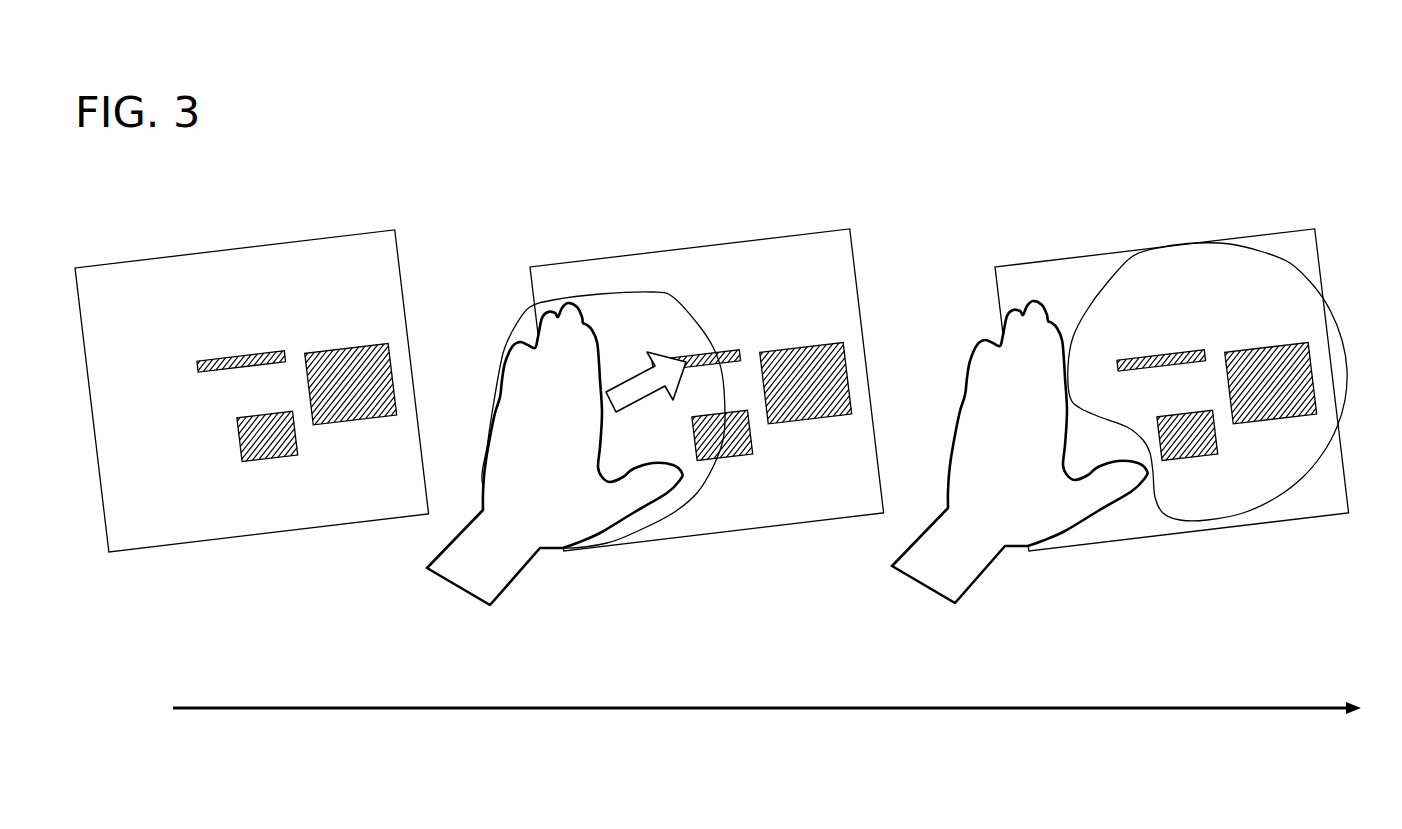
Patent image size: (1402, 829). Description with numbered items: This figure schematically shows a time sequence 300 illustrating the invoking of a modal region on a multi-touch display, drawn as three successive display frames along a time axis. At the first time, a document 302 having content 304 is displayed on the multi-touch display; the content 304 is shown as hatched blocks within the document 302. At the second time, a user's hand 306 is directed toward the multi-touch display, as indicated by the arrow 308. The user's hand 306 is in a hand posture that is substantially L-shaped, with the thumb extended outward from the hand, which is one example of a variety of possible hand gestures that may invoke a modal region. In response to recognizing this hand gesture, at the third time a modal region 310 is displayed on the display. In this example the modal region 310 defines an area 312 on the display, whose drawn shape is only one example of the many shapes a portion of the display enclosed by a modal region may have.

The time sequence 300 is at (738, 72).
The document 302 is at (145, 550).
The content 304 is at (337, 328).
The user's hand 306 is at (787, 453).
The arrow 308 is at (620, 413).
The modal region 310 is at (678, 503).
The area 312 is at (1306, 300).